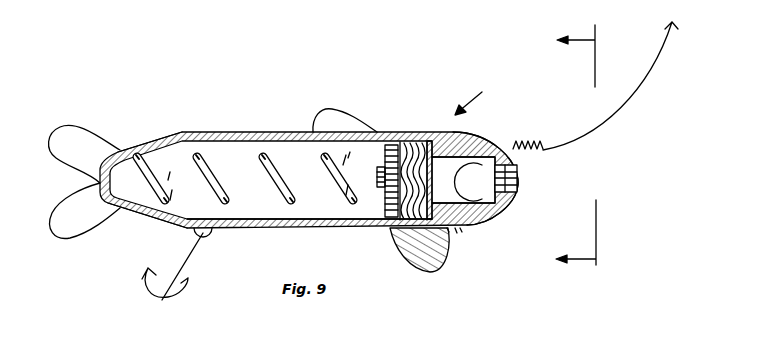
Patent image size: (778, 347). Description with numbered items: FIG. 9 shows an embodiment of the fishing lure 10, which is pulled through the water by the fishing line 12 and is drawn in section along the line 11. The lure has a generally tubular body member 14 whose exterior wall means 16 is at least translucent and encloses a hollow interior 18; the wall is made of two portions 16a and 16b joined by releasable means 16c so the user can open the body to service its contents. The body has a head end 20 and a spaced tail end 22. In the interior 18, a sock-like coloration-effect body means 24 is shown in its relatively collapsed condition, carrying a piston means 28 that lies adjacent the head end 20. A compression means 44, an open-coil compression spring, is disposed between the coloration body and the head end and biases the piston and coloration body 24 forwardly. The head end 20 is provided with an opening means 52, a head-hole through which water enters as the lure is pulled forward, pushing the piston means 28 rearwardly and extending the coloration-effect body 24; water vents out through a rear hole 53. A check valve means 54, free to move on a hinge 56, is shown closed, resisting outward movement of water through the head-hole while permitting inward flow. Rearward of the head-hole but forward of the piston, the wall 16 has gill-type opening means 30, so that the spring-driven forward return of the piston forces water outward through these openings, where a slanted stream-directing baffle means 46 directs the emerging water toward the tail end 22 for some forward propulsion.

The fishing lure 10 is at (479, 101).
The section line 11 is at (588, 152).
The fishing line 12 is at (653, 62).
The body member 14 is at (390, 141).
The exterior wall means 16 is at (238, 133).
The wall portion 16a is at (460, 228).
The wall portion 16b is at (447, 230).
The releasable means 16c is at (455, 230).
The hollow interior 18 is at (274, 219).
The head end 20 is at (470, 137).
The tail end 22 is at (134, 151).
The coloration-effect body means 24 is at (407, 227).
The piston means 28 is at (398, 138).
The opening means 30 is at (463, 215).
The compression means 44 is at (207, 157).
The stream-directing baffle means 46 is at (470, 195).
The opening means 52 is at (520, 189).
The rear hole 53 is at (150, 221).
The check valve means 54 is at (522, 180).
The hinge 56 is at (498, 144).